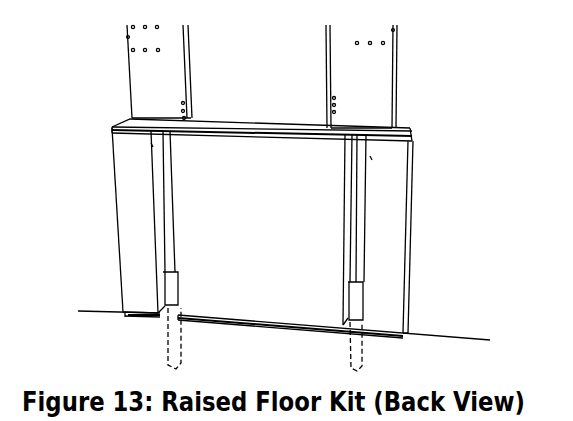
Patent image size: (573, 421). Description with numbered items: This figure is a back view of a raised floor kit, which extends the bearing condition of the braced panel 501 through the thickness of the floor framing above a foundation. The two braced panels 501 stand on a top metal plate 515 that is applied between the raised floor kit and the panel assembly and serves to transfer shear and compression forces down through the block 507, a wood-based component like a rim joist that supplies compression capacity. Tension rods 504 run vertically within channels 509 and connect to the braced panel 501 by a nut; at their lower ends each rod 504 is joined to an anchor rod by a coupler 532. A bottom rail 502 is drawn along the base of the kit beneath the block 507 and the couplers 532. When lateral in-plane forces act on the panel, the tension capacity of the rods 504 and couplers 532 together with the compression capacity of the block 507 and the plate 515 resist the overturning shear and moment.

The braced panel 501 is at (219, 76).
The bottom rail 502 is at (302, 311).
The tension rod 504 is at (200, 228).
The block 507 is at (92, 220).
The channel 509 is at (337, 179).
The top metal plate 515 is at (309, 125).
The coupler 532 is at (195, 315).